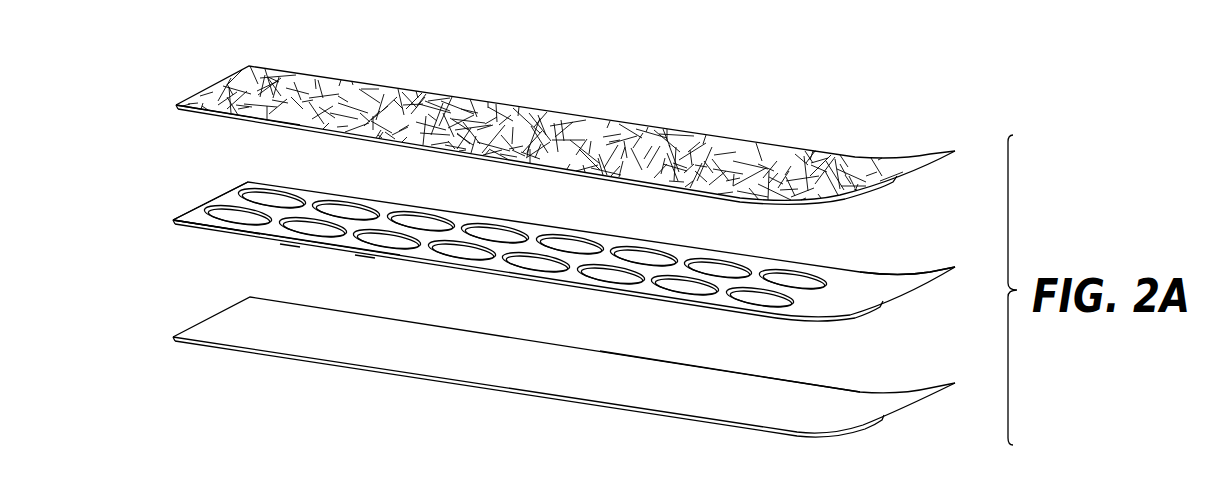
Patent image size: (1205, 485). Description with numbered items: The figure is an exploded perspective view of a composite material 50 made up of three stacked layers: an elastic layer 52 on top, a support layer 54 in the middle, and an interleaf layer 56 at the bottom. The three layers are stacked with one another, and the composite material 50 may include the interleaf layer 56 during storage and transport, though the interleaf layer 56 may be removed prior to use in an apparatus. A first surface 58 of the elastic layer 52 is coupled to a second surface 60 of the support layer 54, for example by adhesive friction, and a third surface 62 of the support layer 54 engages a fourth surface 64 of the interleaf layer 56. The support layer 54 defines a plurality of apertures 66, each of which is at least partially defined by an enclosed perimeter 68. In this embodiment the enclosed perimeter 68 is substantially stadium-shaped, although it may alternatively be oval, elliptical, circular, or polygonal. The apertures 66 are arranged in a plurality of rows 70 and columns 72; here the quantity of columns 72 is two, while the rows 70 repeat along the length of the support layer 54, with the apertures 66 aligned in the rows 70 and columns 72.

The composite material 50 is at (953, 93).
The elastic layer 52 is at (226, 85).
The support layer 54 is at (223, 202).
The interleaf layer 56 is at (220, 328).
The first surface 58 is at (183, 111).
The second surface 60 is at (829, 304).
The third surface 62 is at (196, 236).
The fourth surface 64 is at (682, 403).
The apertures 66 is at (335, 210).
The enclosed perimeter 68 is at (420, 213).
The rows 70 is at (291, 247).
The columns 72 is at (229, 183).